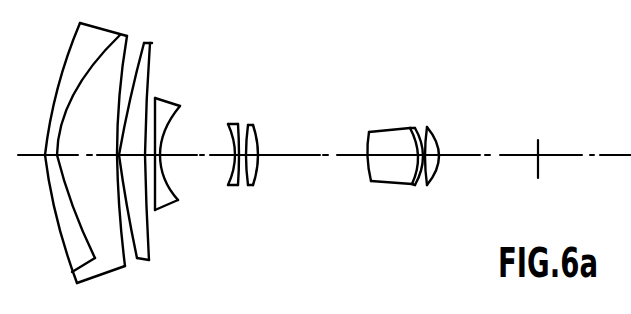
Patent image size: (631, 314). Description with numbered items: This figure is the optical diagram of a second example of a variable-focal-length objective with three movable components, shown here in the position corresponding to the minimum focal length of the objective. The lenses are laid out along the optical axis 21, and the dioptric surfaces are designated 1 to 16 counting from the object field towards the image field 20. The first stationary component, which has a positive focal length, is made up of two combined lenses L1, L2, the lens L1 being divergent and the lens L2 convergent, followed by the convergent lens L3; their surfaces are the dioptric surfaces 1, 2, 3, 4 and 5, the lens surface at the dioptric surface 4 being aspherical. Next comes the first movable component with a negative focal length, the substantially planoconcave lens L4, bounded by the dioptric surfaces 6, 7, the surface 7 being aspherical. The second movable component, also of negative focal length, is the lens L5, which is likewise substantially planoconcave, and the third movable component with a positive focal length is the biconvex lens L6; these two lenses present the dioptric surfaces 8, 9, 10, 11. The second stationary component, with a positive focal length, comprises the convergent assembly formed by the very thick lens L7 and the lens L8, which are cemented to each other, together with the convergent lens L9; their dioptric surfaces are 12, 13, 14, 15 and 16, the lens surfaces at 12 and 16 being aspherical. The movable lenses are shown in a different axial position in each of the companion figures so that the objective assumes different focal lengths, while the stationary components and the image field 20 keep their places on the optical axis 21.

The lens L1 is at (71, 149).
The lens L2 is at (77, 167).
The lens L3 is at (160, 148).
The lens L4 is at (178, 154).
The lens L5 is at (234, 149).
The biconvex lens L6 is at (276, 149).
The very thick lens L7 is at (384, 148).
The lens L8 is at (426, 152).
The convergent lens L9 is at (461, 139).
The dioptric surface 1 is at (62, 246).
The dioptric surface 2 is at (73, 275).
The dioptric surface 3 is at (126, 263).
The dioptric surface 4 is at (149, 258).
The dioptric surface 5 is at (148, 241).
The dioptric surface 6 is at (168, 205).
The dioptric surface 7 is at (177, 190).
The dioptric surface 8 is at (232, 176).
The dioptric surface 9 is at (239, 182).
The dioptric surface 10 is at (256, 171).
The dioptric surface 11 is at (258, 166).
The dioptric surface 12 is at (369, 168).
The dioptric surface 13 is at (410, 174).
The dioptric surface 14 is at (421, 184).
The dioptric surface 15 is at (434, 170).
The dioptric surface 16 is at (440, 166).
The image field 20 is at (540, 153).
The optical axis 21 is at (318, 156).